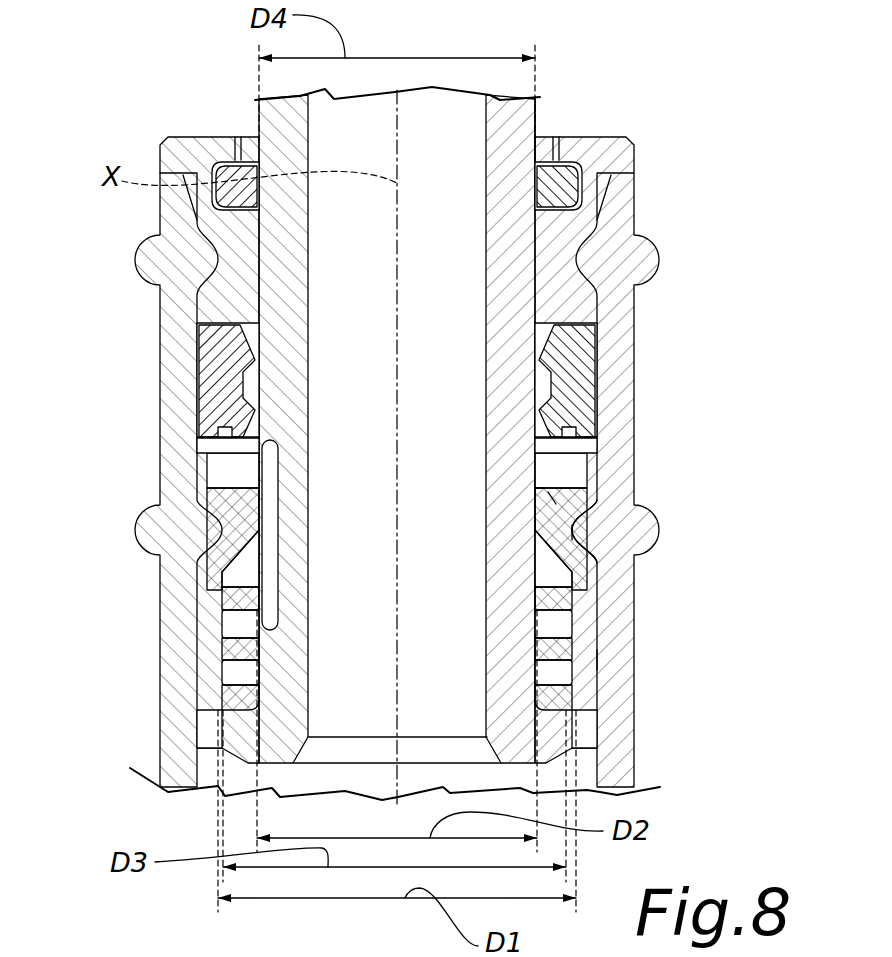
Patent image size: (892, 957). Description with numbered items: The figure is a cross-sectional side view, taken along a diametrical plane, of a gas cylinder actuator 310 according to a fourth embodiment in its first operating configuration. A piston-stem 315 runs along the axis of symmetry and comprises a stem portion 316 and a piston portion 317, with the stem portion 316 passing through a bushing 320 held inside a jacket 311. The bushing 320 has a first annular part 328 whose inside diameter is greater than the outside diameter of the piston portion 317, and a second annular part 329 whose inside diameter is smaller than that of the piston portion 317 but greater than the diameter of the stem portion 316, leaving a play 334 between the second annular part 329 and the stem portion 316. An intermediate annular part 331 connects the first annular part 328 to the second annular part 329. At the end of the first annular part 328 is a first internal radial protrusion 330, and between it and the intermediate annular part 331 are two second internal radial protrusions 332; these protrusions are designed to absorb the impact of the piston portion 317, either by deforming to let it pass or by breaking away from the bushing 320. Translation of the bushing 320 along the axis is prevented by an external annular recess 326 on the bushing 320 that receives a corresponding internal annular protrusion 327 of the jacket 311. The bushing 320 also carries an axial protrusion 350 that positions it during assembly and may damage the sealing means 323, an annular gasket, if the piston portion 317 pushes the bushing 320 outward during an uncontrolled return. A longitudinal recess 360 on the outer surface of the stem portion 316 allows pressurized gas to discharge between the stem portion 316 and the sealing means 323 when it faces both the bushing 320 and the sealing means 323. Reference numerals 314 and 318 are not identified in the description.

The gas cylinder actuator 310 is at (732, 98).
The jacket 311 is at (632, 330).
The upper seal 314 is at (542, 272).
The piston-stem 315 is at (545, 112).
The stem portion 316 is at (268, 120).
The piston portion 317 is at (560, 748).
The pipe end 318 is at (249, 927).
The bushing 320 is at (612, 614).
The sealing means 323 is at (210, 375).
The external annular recess 326 is at (572, 535).
The internal annular protrusion 327 is at (595, 537).
The first annular part 328 is at (594, 661).
The second annular part 329 is at (550, 497).
The first internal radial protrusion 330 is at (215, 712).
The intermediate annular part 331 is at (220, 567).
The second internal radial protrusion 332 is at (240, 650).
The play 334 is at (541, 492).
The axial protrusion 350 is at (207, 471).
The longitudinal recess 360 is at (268, 520).